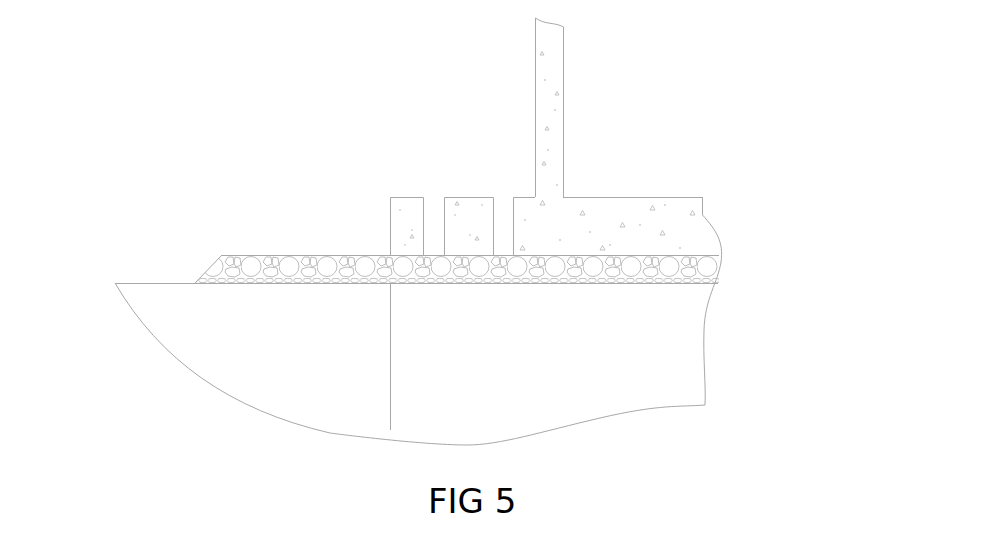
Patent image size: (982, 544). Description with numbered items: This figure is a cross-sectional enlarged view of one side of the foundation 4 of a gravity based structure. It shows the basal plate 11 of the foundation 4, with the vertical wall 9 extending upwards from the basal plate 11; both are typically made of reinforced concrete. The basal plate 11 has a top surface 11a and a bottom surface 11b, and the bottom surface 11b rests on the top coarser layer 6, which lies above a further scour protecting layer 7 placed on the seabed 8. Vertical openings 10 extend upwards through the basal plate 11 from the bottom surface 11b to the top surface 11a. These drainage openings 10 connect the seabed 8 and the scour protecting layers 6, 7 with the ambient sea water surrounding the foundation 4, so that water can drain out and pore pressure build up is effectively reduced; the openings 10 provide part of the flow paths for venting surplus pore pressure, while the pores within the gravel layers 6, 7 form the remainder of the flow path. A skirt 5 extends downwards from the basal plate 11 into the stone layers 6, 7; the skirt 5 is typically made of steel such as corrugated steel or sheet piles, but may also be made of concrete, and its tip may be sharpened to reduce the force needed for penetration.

The foundation 4 is at (390, 142).
The skirt 5 is at (388, 353).
The top coarser layer 6 is at (687, 267).
The scour protecting layer 7 is at (678, 280).
The seabed 8 is at (138, 283).
The vertical wall 9 is at (557, 70).
The vertical openings 10 is at (502, 200).
The basal plate 11 is at (400, 233).
The top surface 11a is at (620, 195).
The bottom surface 11b is at (672, 253).